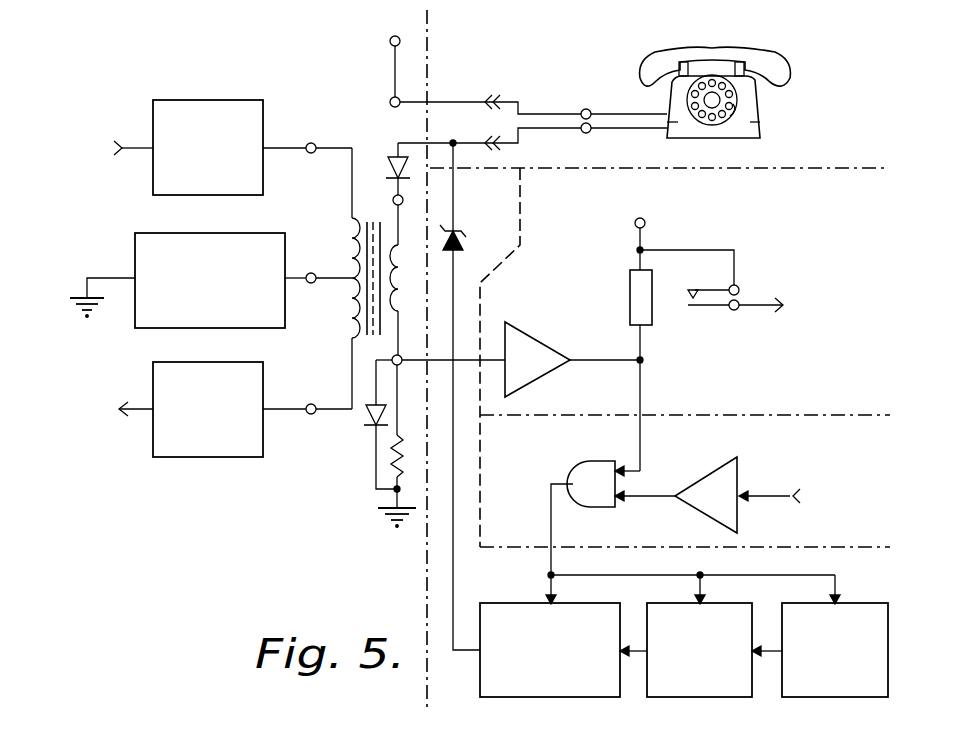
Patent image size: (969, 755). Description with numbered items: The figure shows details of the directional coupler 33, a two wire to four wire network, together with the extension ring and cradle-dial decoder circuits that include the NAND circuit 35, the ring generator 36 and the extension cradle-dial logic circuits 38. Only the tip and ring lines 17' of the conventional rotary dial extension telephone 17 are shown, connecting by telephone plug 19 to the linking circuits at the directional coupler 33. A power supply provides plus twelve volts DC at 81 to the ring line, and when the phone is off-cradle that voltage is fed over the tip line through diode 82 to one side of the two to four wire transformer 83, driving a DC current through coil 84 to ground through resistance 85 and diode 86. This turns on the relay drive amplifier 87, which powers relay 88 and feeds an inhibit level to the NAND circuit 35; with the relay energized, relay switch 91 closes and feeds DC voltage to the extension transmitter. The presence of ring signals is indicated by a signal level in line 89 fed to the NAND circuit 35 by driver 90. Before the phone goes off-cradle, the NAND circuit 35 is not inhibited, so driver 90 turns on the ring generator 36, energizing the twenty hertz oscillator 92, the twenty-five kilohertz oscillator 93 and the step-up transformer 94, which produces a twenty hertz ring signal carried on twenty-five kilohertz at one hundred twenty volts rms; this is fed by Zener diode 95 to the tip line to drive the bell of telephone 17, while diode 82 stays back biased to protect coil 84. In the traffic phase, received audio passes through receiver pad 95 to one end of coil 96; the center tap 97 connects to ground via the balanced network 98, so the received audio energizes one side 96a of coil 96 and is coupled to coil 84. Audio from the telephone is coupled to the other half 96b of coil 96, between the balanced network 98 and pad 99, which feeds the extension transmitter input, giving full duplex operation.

The directional coupler 33 is at (264, 238).
The receiver pad 95 is at (263, 118).
The balanced network 98 is at (160, 233).
The pad 99 is at (175, 362).
The coil 96 is at (343, 263).
The one side of coil 96a is at (350, 232).
The other half of coil 96b is at (348, 310).
The center tap 97 is at (335, 282).
The +12 volts DC supply point 81 is at (388, 61).
The diode 82 is at (390, 158).
The two to four wire transformer 83 is at (386, 179).
The coil 84 is at (394, 290).
The resistance 85 is at (400, 449).
The diode 86 is at (366, 418).
The relay drive amplifier 87 is at (537, 335).
The relay 88 is at (630, 286).
The line 89 is at (748, 494).
The driver 90 is at (701, 480).
The relay switch 91 is at (695, 306).
The 20 Hz oscillator 92 is at (826, 698).
The 25 KHz oscillator 93 is at (707, 698).
The step-up transformer 94 is at (562, 698).
The NAND circuit 35 is at (605, 460).
The ring generator 36 is at (427, 578).
The extension cradle-dial logic circuits 38 is at (812, 416).
The extension telephone 17 is at (726, 92).
The tip and ring lines of extension phone 17' is at (616, 108).
The telephone plug 19 is at (494, 104).